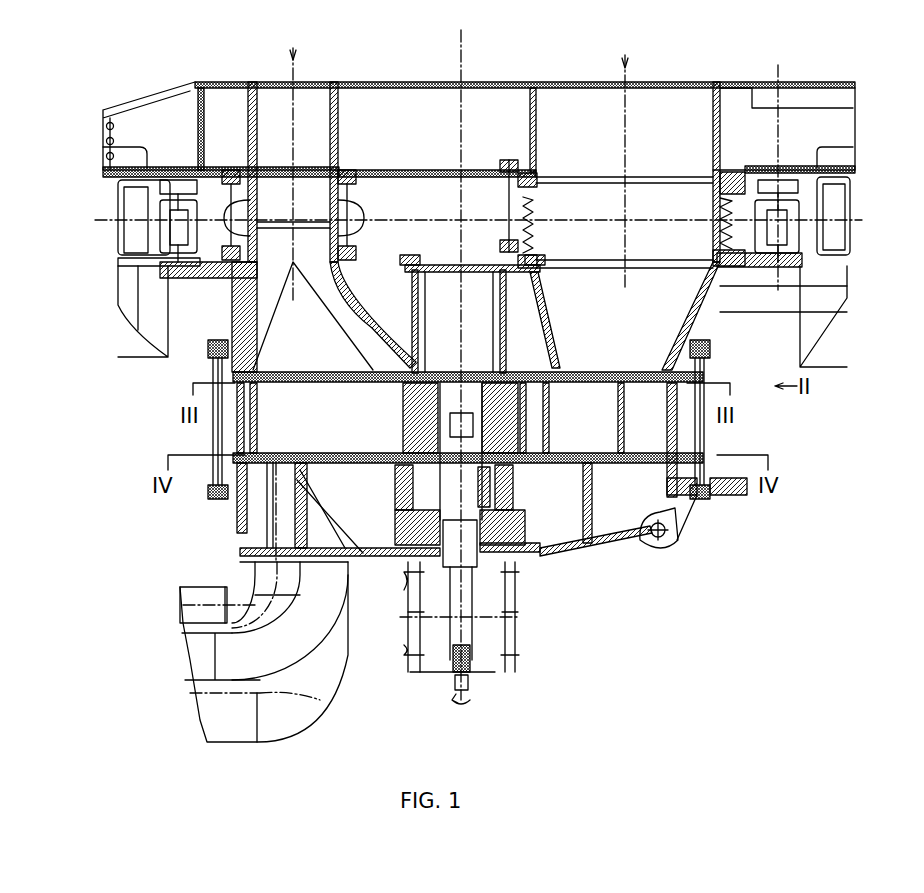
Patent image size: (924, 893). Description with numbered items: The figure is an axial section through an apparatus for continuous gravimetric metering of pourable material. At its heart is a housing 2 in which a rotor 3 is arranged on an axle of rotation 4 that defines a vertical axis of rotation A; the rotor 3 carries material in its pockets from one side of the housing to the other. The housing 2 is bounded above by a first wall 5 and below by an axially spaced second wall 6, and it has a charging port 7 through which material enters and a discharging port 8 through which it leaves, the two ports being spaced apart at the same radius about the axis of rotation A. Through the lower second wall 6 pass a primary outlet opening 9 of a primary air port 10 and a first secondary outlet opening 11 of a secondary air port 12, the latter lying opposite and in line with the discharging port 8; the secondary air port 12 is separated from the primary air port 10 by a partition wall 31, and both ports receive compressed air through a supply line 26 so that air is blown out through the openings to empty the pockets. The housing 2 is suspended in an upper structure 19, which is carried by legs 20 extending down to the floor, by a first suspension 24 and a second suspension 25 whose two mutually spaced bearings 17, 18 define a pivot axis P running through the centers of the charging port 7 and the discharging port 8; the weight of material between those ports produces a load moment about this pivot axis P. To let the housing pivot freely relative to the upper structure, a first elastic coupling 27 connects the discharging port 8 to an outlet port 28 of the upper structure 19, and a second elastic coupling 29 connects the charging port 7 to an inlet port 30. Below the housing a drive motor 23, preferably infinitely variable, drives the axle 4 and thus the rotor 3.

The housing 2 is at (722, 300).
The rotor 3 is at (612, 465).
The axle of rotation 4 is at (482, 562).
The first wall 5 is at (233, 347).
The second wall 6 is at (680, 510).
The charging port 7 is at (722, 288).
The discharging port 8 is at (250, 310).
The primary outlet opening 9 is at (303, 543).
The primary air port 10 is at (285, 537).
The first secondary outlet opening 11 is at (215, 500).
The secondary air port 12 is at (262, 510).
The bearing 17 is at (190, 226).
The bearing 18 is at (782, 222).
The upper structure 19 is at (742, 82).
The legs 20 is at (130, 292).
The drive motor 23 is at (495, 645).
The first suspension 24 is at (172, 236).
The second suspension 25 is at (800, 240).
The supply line 26 is at (225, 657).
The first elastic coupling 27 is at (235, 215).
The outlet port 28 is at (280, 138).
The second elastic coupling 29 is at (716, 178).
The inlet port 30 is at (575, 105).
The partition wall 31 is at (232, 562).
The pivot axis P is at (745, 215).
The axis of rotation A is at (470, 692).